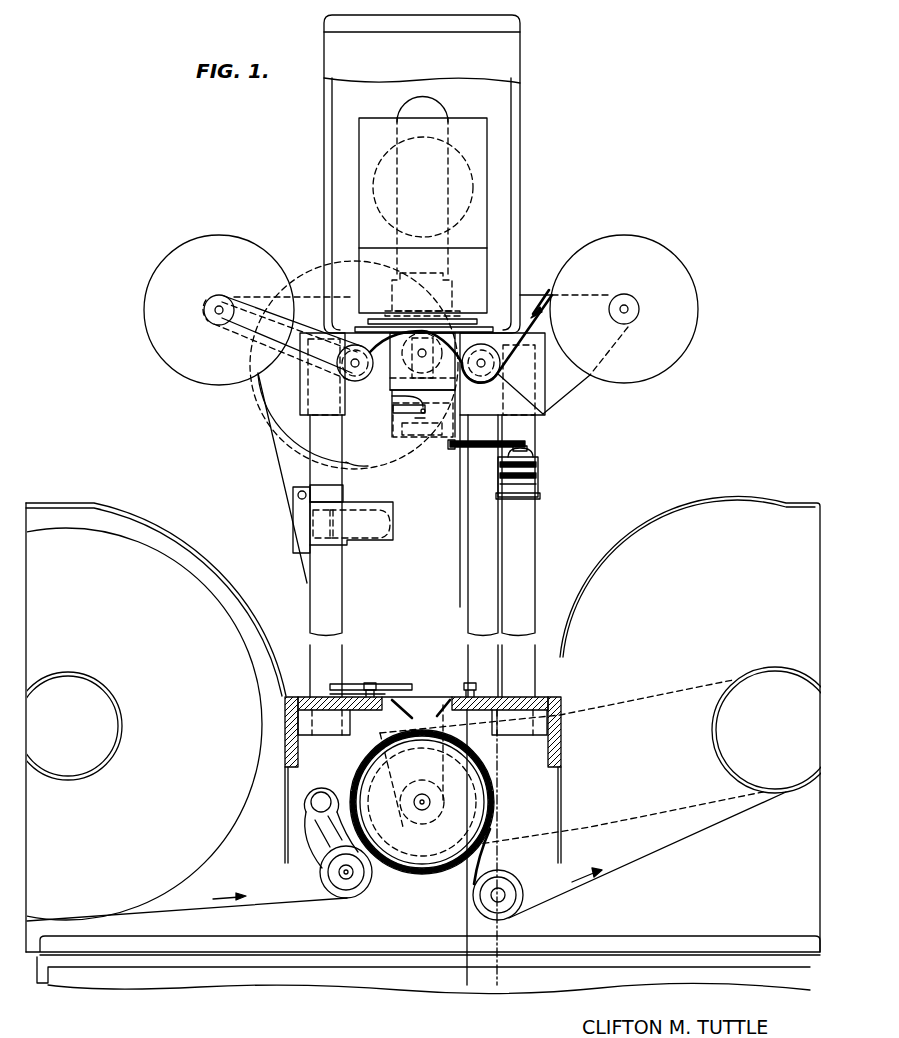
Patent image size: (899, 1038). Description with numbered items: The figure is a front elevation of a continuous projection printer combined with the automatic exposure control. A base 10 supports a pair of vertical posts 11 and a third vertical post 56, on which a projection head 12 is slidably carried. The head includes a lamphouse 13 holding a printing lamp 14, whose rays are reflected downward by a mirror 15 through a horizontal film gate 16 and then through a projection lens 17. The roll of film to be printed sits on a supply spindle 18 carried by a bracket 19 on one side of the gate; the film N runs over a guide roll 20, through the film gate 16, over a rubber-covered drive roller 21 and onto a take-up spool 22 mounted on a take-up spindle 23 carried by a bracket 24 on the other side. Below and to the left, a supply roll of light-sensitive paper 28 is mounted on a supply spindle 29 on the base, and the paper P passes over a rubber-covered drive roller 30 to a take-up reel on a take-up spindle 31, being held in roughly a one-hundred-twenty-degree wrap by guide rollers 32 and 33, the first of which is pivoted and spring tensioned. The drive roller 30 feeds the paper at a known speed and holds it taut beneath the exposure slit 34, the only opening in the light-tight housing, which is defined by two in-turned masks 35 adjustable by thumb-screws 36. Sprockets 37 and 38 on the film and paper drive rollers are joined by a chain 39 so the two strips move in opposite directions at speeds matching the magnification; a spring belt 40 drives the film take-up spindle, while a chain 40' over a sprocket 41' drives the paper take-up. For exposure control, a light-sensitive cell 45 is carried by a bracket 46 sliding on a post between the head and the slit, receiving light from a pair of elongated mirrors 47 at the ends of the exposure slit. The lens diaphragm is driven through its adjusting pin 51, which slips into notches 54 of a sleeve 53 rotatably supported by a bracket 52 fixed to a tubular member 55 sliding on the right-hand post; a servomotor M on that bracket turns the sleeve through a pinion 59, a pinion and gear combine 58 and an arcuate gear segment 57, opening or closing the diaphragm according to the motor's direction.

The base 10 is at (228, 968).
The vertical posts 11 is at (312, 603).
The projection head 12 is at (324, 160).
The lamphouse 13 is at (487, 161).
The printing lamp 14 is at (410, 109).
The mirror 15 is at (470, 207).
The film gate 16 is at (460, 338).
The projection lens 17 is at (395, 410).
The supply spindle 18 is at (627, 303).
The bracket 19 is at (582, 388).
The guide roll 20 is at (535, 413).
The drive roller 21 is at (343, 398).
The take-up spool 22 is at (173, 373).
The take-up spindle 23 is at (216, 300).
The bracket 24 is at (260, 392).
The supply roll of light sensitive paper 28 is at (143, 727).
The supply spindle 29 is at (68, 726).
The drive roller 30 is at (495, 807).
The take-up spindle 31 is at (699, 724).
The guide roller 32 is at (321, 882).
The guide roller 33 is at (523, 893).
The exposure slit 34 is at (403, 723).
The in-turned masks 35 is at (410, 700).
The adjustable thumb-screws 36 is at (370, 682).
The sprocket 37 is at (295, 446).
The sprocket 38 is at (416, 823).
The chain 39 is at (274, 444).
The spring belt 40 is at (354, 356).
The chain 40' is at (583, 799).
The sprocket 41' is at (438, 867).
The light-sensitive cell 45 is at (368, 545).
The bracket 46 is at (296, 555).
The elongated mirrors 47 is at (400, 684).
The diaphragm adjusting pin 51 is at (410, 430).
The bracket 52 is at (416, 452).
The sleeve 53 is at (418, 440).
The notches 54 is at (392, 400).
The tubular member 55 is at (536, 496).
The third vertical post 56 is at (468, 610).
The arcuate gear segment 57 is at (527, 445).
The pinion and gear combine 58 is at (457, 446).
The pinion 59 is at (532, 458).
The servomotor M is at (536, 480).
The film N is at (537, 295).
The paper P is at (192, 915).